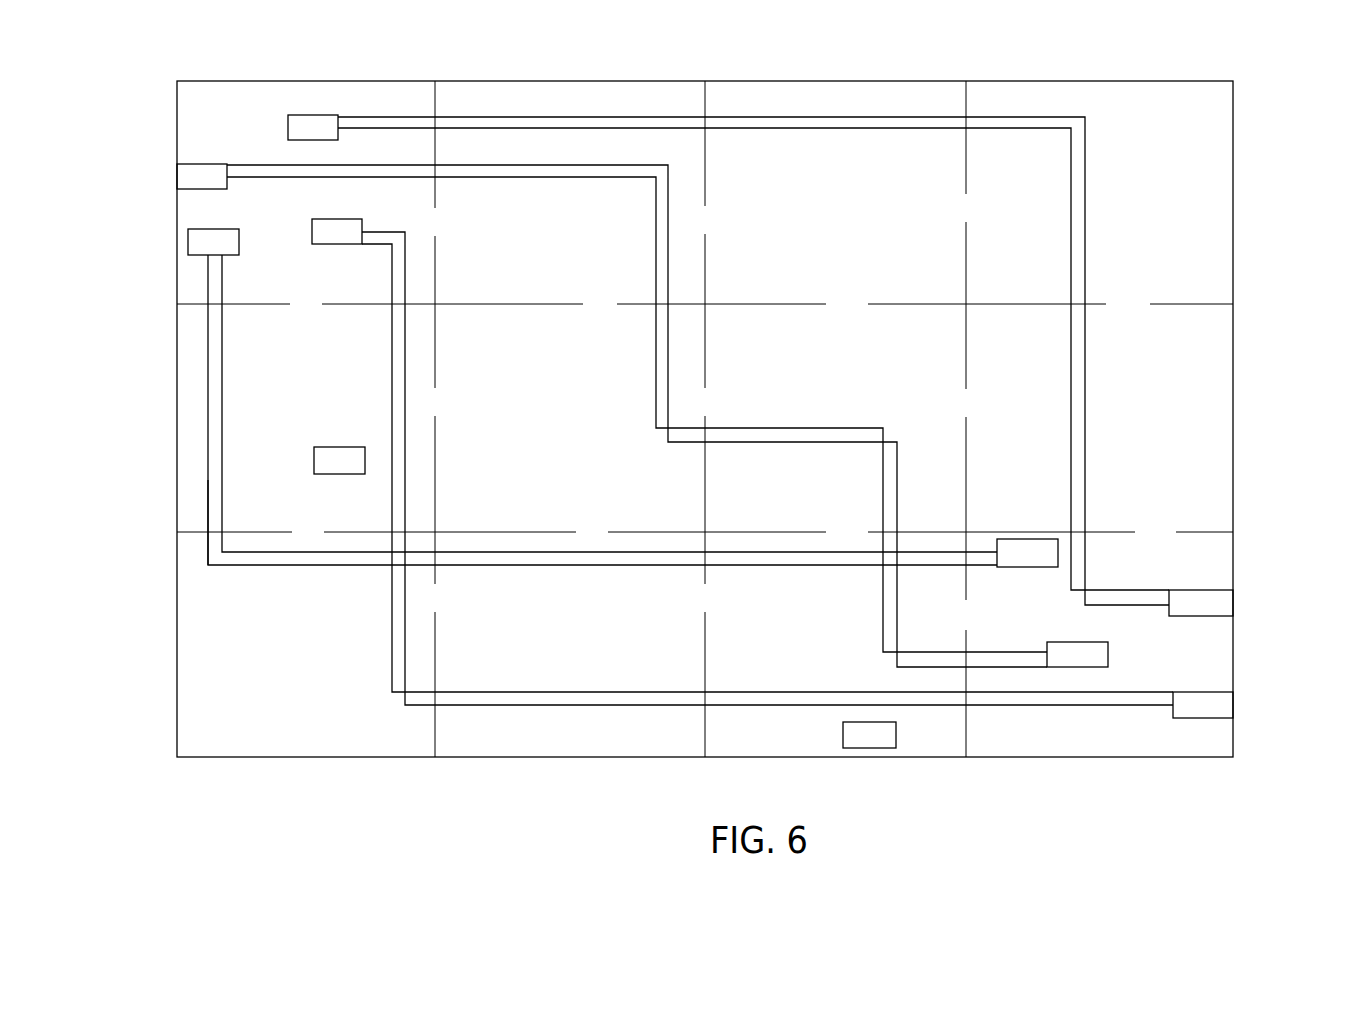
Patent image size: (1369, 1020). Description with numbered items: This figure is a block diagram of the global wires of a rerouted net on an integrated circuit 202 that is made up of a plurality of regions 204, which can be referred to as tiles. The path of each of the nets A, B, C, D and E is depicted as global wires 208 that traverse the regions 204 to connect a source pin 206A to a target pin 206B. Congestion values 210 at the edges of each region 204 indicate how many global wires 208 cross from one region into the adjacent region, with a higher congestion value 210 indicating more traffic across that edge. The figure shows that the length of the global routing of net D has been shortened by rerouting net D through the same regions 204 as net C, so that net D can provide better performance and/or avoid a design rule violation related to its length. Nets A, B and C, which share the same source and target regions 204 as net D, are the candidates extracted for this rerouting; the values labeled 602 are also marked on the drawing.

The integrated circuit 202 is at (1233, 118).
The regions 204 is at (198, 503).
The source pin 206A is at (315, 115).
The target pin 206B is at (1022, 539).
The global wires 208 is at (392, 643).
The congestion values 210 is at (207, 420).
The probability values 602 is at (848, 285).